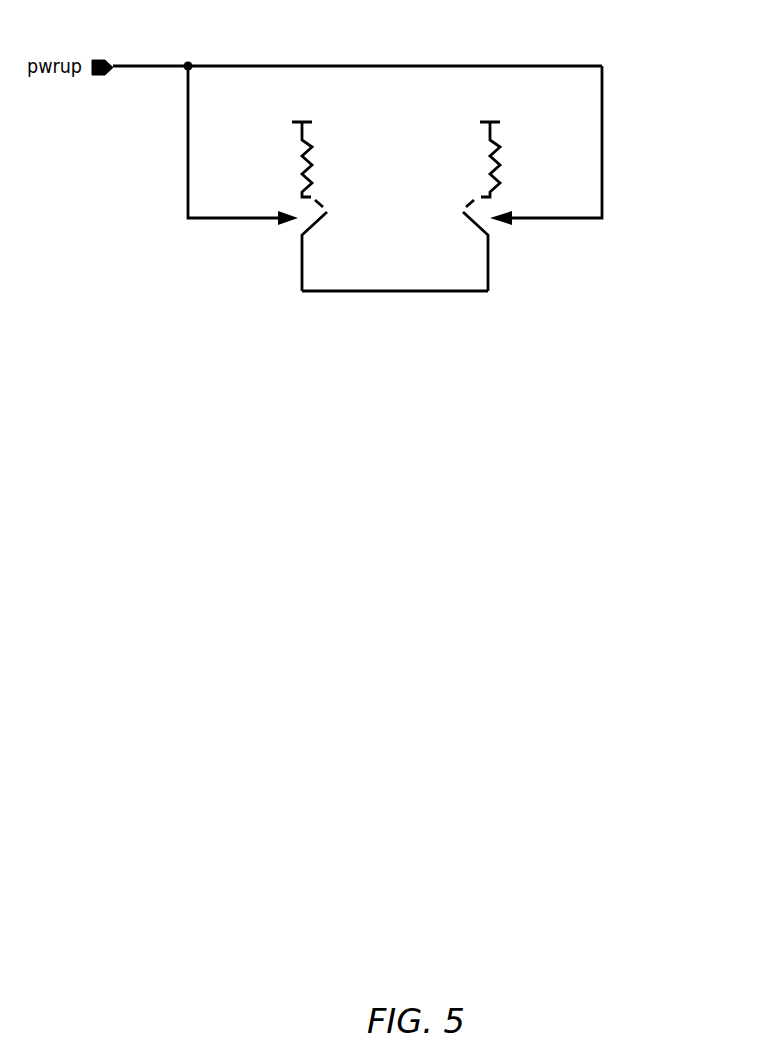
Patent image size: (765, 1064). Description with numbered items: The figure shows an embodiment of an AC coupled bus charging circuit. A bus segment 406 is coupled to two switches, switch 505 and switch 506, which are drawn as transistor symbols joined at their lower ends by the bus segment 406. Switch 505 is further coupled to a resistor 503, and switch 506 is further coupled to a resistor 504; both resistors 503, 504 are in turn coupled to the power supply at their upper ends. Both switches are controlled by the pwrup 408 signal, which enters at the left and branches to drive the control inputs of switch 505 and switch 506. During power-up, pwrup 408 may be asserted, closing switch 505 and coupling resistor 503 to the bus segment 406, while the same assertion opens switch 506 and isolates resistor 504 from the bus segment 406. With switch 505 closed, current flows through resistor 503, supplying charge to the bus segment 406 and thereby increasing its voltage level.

The pwrup 408 is at (156, 65).
The resistor 503 is at (297, 159).
The resistor 504 is at (488, 159).
The switch 505 is at (320, 220).
The switch 506 is at (476, 222).
The bus segment 406 is at (405, 293).